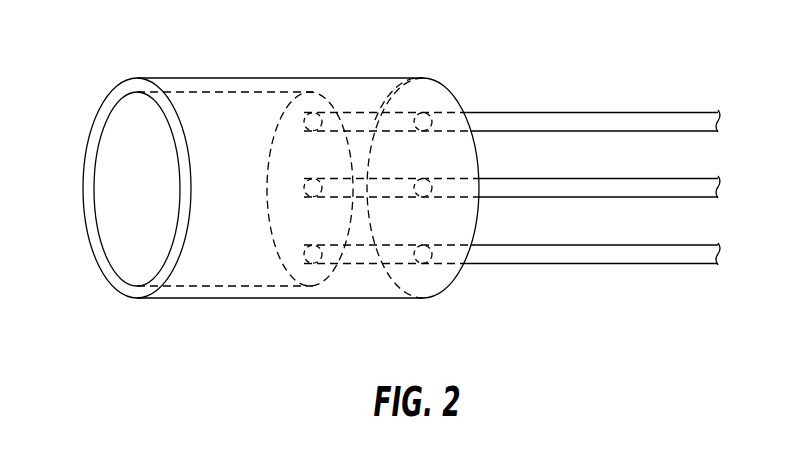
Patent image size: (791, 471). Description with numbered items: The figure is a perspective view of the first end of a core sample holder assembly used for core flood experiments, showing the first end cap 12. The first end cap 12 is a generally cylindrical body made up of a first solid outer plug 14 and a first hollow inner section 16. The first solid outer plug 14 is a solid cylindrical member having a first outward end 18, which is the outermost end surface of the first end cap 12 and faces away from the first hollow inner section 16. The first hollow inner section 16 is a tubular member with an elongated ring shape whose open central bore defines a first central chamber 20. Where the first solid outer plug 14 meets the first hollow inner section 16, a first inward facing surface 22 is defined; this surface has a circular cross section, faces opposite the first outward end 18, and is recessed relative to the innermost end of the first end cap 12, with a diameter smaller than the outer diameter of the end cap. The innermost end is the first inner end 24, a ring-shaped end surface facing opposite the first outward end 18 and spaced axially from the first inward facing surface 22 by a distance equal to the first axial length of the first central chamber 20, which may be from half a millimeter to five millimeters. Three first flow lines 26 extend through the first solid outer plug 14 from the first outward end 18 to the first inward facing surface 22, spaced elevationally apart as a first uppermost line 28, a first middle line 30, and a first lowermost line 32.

The first end cap 12 is at (276, 172).
The first solid outer plug 14 is at (370, 296).
The first hollow inner section 16 is at (207, 298).
The first outward end 18 is at (445, 97).
The first central chamber 20 is at (103, 190).
The first inward facing surface 22 is at (262, 139).
The first inner end 24 is at (130, 292).
The first flow lines 26 is at (512, 199).
The first uppermost line 28 is at (653, 112).
The first middle line 30 is at (653, 178).
The first lowermost line 32 is at (653, 245).